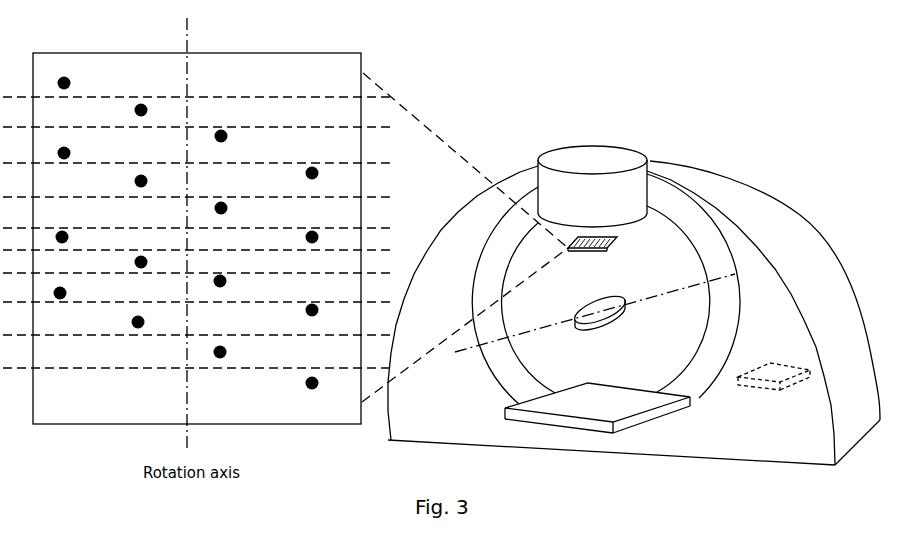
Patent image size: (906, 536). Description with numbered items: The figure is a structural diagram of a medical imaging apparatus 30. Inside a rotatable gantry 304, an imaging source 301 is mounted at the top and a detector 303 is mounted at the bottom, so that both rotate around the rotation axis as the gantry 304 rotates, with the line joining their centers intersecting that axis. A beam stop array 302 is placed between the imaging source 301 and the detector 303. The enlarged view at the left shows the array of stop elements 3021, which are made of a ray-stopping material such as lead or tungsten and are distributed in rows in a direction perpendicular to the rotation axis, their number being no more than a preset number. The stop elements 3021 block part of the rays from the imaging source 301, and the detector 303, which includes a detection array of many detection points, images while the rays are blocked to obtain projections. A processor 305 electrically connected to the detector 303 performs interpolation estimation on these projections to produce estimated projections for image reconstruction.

The medical imaging apparatus 30 is at (634, 294).
The imaging source 301 is at (566, 155).
The beam stop array 302 is at (606, 250).
The detector 303 is at (653, 418).
The gantry 304 is at (760, 207).
The processor 305 is at (792, 384).
The stop element 3021 is at (66, 77).